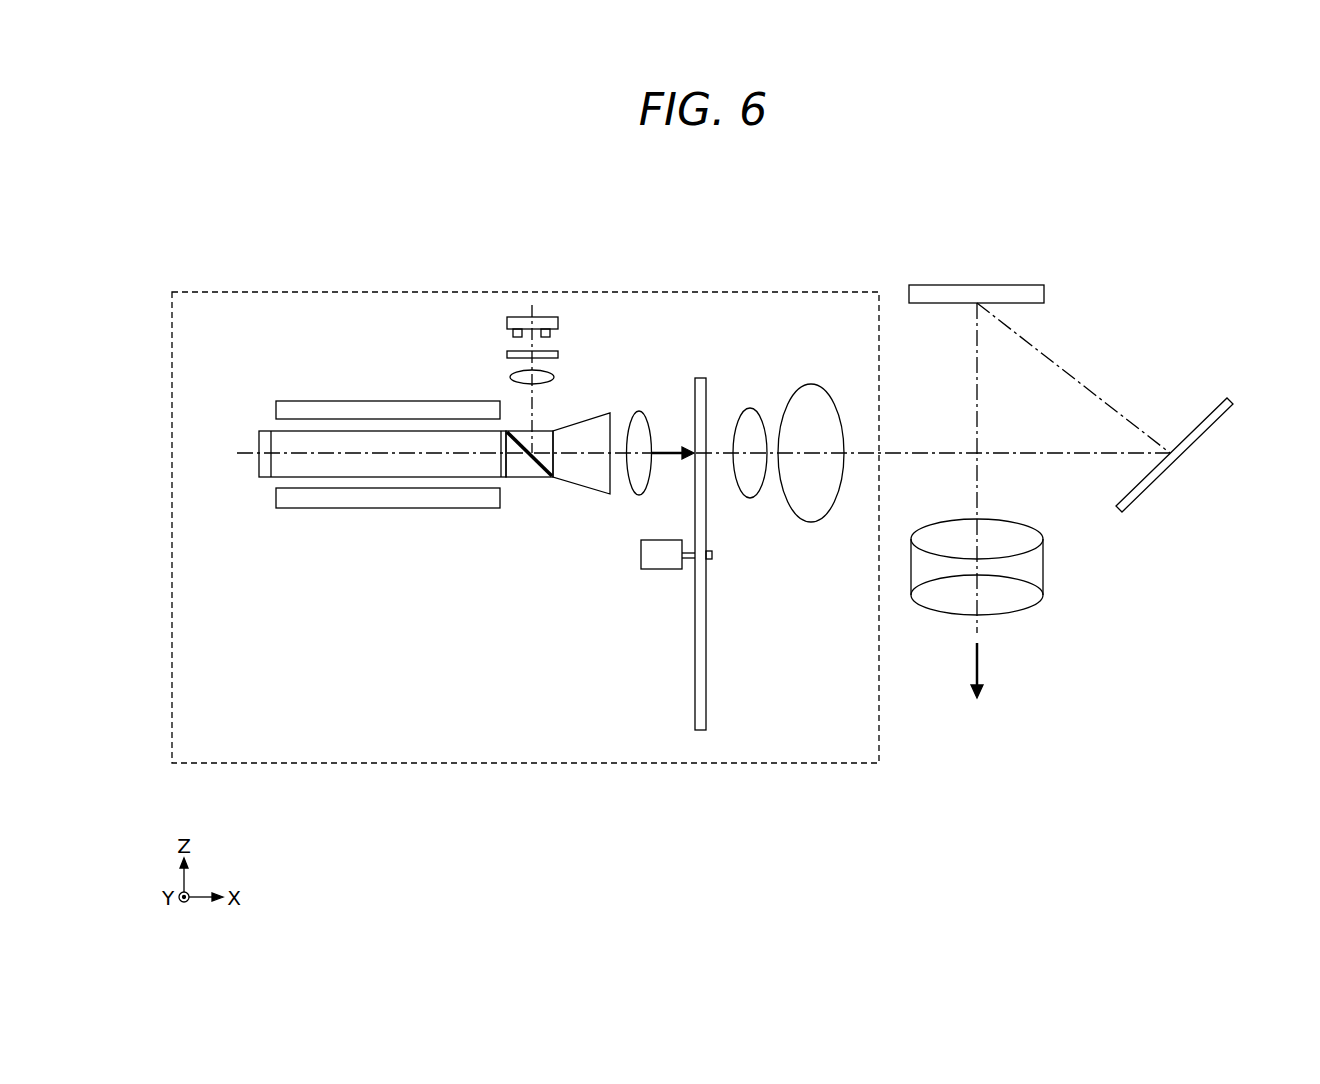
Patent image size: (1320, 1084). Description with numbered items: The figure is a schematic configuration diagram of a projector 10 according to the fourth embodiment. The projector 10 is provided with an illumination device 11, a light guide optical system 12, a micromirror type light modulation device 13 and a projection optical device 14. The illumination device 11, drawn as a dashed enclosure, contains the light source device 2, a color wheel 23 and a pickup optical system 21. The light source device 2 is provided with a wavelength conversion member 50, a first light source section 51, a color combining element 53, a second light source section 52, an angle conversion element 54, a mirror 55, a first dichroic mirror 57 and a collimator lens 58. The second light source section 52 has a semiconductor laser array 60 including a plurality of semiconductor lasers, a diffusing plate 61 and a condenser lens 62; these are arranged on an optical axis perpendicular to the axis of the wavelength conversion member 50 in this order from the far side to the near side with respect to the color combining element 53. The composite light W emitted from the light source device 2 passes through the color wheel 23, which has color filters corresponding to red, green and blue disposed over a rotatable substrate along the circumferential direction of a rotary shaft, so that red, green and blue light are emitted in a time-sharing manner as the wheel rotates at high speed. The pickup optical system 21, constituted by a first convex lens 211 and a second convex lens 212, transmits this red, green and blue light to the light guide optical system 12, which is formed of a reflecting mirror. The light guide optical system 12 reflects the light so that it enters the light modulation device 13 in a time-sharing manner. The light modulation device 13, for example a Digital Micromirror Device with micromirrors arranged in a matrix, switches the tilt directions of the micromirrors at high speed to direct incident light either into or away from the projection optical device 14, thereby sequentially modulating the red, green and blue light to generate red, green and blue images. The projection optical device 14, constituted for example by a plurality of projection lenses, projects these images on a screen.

The light source device 2 is at (402, 501).
The projector 10 is at (525, 464).
The illumination device 11 is at (404, 292).
The light guide optical system 12 is at (1198, 430).
The micromirror type light modulation device 13 is at (953, 293).
The projection optical device 14 is at (1031, 564).
The pickup optical system 21 is at (776, 358).
The first convex lens 211 is at (752, 408).
The second convex lens 212 is at (808, 385).
The color wheel 23 is at (700, 663).
The wavelength conversion member 50 is at (359, 469).
The first light source section 51 is at (317, 406).
The second light source section 52 is at (579, 288).
The color combining element 53 is at (520, 473).
The angle conversion element 54 is at (574, 475).
The mirror 55 is at (262, 444).
The first dichroic mirror 57 is at (506, 430).
The collimator lens 58 is at (636, 480).
The semiconductor laser array 60 is at (547, 317).
The diffusing plate 61 is at (558, 354).
The condenser lens 62 is at (555, 376).
The composite light W is at (668, 446).